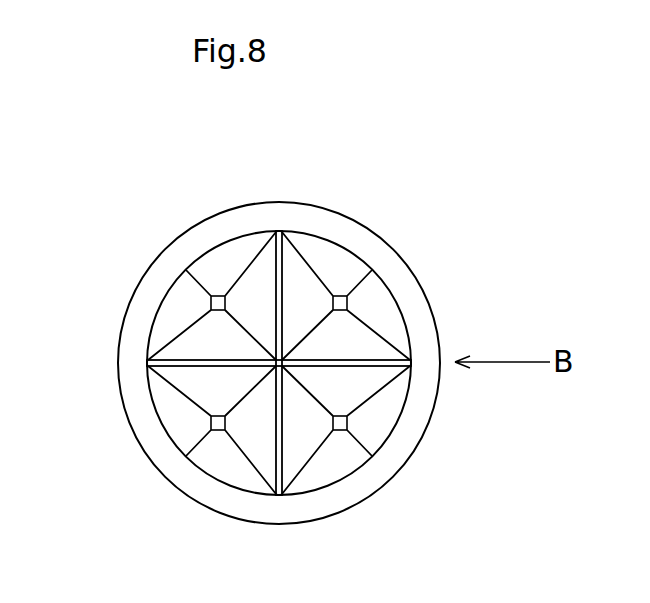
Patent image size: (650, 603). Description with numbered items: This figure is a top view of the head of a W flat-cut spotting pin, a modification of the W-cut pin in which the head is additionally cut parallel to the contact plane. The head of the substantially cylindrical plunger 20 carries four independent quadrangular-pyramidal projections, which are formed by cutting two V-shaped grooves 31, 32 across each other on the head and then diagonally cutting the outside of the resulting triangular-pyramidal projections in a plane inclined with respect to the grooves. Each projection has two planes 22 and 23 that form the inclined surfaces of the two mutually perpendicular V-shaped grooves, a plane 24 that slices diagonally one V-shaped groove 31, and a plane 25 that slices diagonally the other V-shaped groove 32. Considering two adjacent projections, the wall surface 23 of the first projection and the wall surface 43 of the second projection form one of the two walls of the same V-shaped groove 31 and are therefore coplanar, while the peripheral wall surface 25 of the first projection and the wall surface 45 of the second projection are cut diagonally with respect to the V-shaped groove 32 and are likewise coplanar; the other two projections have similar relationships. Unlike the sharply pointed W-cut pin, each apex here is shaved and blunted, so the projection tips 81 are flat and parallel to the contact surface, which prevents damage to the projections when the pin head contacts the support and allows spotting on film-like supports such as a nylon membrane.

The plunger 20 is at (202, 490).
The plane 22 is at (298, 287).
The plane 23 is at (353, 345).
The plane 24 is at (390, 323).
The plane 25 is at (343, 262).
The V-shaped groove 31 is at (147, 366).
The V-shaped groove 32 is at (280, 493).
The wall surface 43 is at (198, 343).
The wall surface 45 is at (223, 260).
The projection tips 81 is at (347, 303).